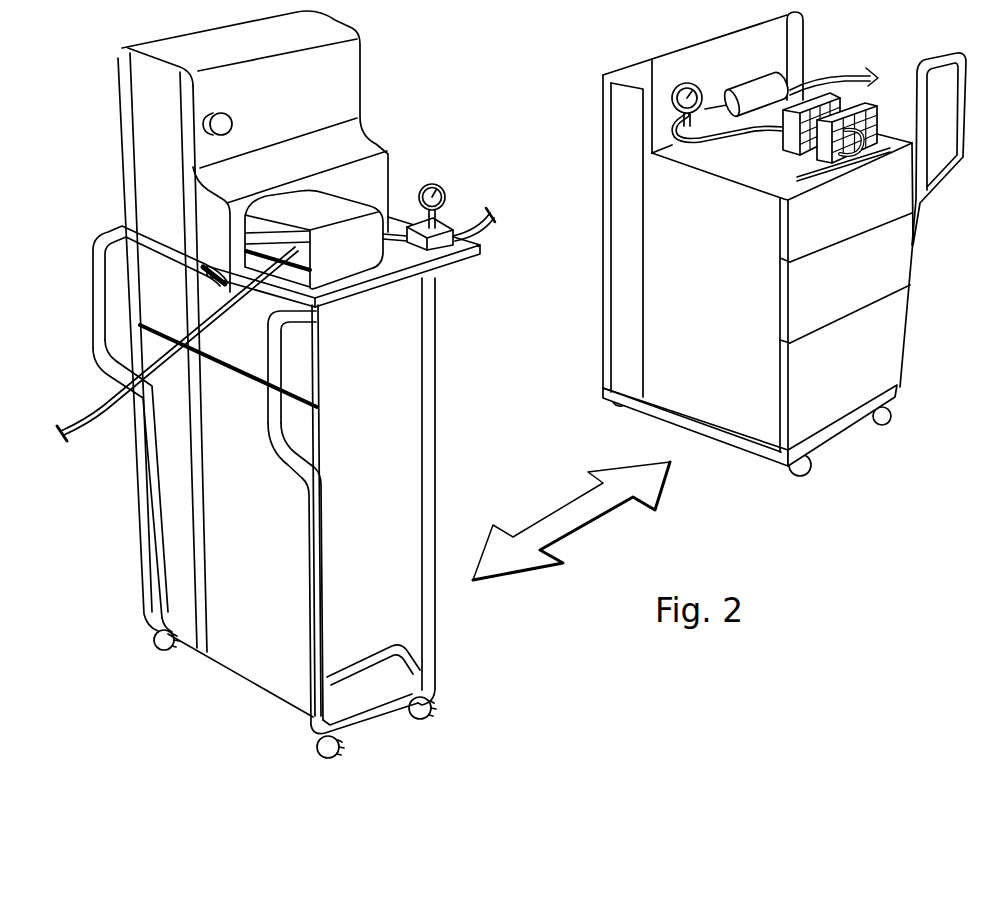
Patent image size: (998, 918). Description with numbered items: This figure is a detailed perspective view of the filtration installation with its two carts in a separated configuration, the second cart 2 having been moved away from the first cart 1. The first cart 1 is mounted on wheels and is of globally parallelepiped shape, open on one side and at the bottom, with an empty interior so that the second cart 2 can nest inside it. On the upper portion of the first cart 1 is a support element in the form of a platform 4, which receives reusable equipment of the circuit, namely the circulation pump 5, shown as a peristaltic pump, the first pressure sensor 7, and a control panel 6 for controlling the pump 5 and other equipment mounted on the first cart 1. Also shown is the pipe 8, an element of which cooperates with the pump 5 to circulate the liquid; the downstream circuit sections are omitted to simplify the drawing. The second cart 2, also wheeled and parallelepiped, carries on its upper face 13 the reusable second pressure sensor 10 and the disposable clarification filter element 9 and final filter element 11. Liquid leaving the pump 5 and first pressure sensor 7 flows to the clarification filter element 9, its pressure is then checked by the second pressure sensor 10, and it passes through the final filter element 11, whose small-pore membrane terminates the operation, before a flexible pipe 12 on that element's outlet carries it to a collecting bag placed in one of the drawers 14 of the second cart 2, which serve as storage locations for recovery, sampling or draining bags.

The first cart 1 is at (223, 537).
The second cart 2 is at (913, 263).
The platform 4 is at (393, 227).
The circulation pump 5 is at (305, 210).
The control panel 6 is at (343, 78).
The first pressure sensor 7 is at (439, 192).
The pipe 8 is at (102, 407).
The clarification filter element 9 is at (856, 103).
The second pressure sensor 10 is at (680, 91).
The final filter element 11 is at (762, 88).
The flexible pipe 12 is at (828, 78).
The upper face 13 is at (757, 163).
The drawers 14 is at (883, 277).